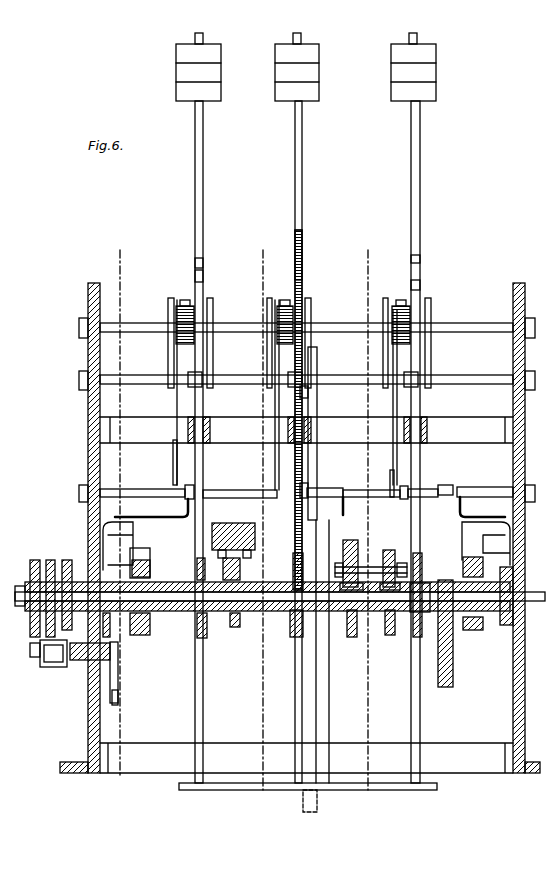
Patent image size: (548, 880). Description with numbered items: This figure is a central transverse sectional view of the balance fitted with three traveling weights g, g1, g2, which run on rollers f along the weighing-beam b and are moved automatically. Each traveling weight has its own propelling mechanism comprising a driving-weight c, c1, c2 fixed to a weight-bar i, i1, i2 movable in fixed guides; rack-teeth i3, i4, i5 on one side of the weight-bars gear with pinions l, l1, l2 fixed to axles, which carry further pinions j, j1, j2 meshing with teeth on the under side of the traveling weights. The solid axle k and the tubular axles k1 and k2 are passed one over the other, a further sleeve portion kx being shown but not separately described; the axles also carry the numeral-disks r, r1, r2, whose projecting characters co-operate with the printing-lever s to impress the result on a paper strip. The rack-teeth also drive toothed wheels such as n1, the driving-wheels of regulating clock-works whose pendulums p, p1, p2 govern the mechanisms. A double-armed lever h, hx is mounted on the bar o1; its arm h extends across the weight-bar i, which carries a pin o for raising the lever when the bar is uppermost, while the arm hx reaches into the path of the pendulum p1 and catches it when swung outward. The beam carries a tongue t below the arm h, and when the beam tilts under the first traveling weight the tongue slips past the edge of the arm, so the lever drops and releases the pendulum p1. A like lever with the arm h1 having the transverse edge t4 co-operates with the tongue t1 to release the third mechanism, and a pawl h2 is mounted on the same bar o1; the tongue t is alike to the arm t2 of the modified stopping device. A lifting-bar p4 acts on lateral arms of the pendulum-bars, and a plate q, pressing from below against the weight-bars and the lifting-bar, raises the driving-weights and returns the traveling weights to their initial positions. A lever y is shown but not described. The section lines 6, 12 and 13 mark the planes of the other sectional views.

The section line 6 is at (114, 517).
The section line 12 is at (267, 522).
The section line 13 is at (370, 523).
The driving-weight c is at (203, 67).
The driving-weight c1 is at (304, 67).
The driving-weight c2 is at (422, 67).
The weight-bar i is at (202, 442).
The weight-bar i1 is at (303, 442).
The weight-bar i2 is at (422, 442).
The rack-teeth i3 is at (204, 272).
The rack-teeth i4 is at (303, 260).
The rack-teeth i5 is at (421, 258).
The pendulum p is at (176, 470).
The pendulum p1 is at (268, 395).
The pendulum p2 is at (387, 403).
The lifting-bar p4 is at (318, 357).
The toothed wheel n1 is at (295, 397).
The pin o is at (258, 501).
The bar o1 is at (140, 489).
The lever arm h is at (295, 482).
The lever arm hx is at (295, 483).
The lever arm h1 is at (322, 487).
The pawl h2 is at (430, 499).
The tongue t is at (186, 508).
The tongue t1 is at (348, 506).
The arm t2 is at (485, 526).
The transverse edge t4 is at (371, 482).
The axle k is at (273, 604).
The tubular axle k1 is at (267, 579).
The sleeve kx is at (267, 614).
The tubular axle k2 is at (499, 596).
The numeral-disk r is at (34, 560).
The numeral-disk r1 is at (50, 560).
The numeral-disk r2 is at (66, 560).
The printing-lever s is at (110, 673).
The weighing-beam b is at (306, 632).
The traveling weight g is at (233, 528).
The traveling weight g1 is at (351, 555).
The traveling weight g2 is at (371, 557).
The rollers f is at (258, 560).
The pinion j is at (196, 603).
The pinion j1 is at (292, 602).
The pinion j2 is at (416, 598).
The pinion l is at (237, 630).
The pinion l1 is at (356, 626).
The pinion l2 is at (384, 626).
The lever y is at (453, 673).
The plate q is at (305, 801).